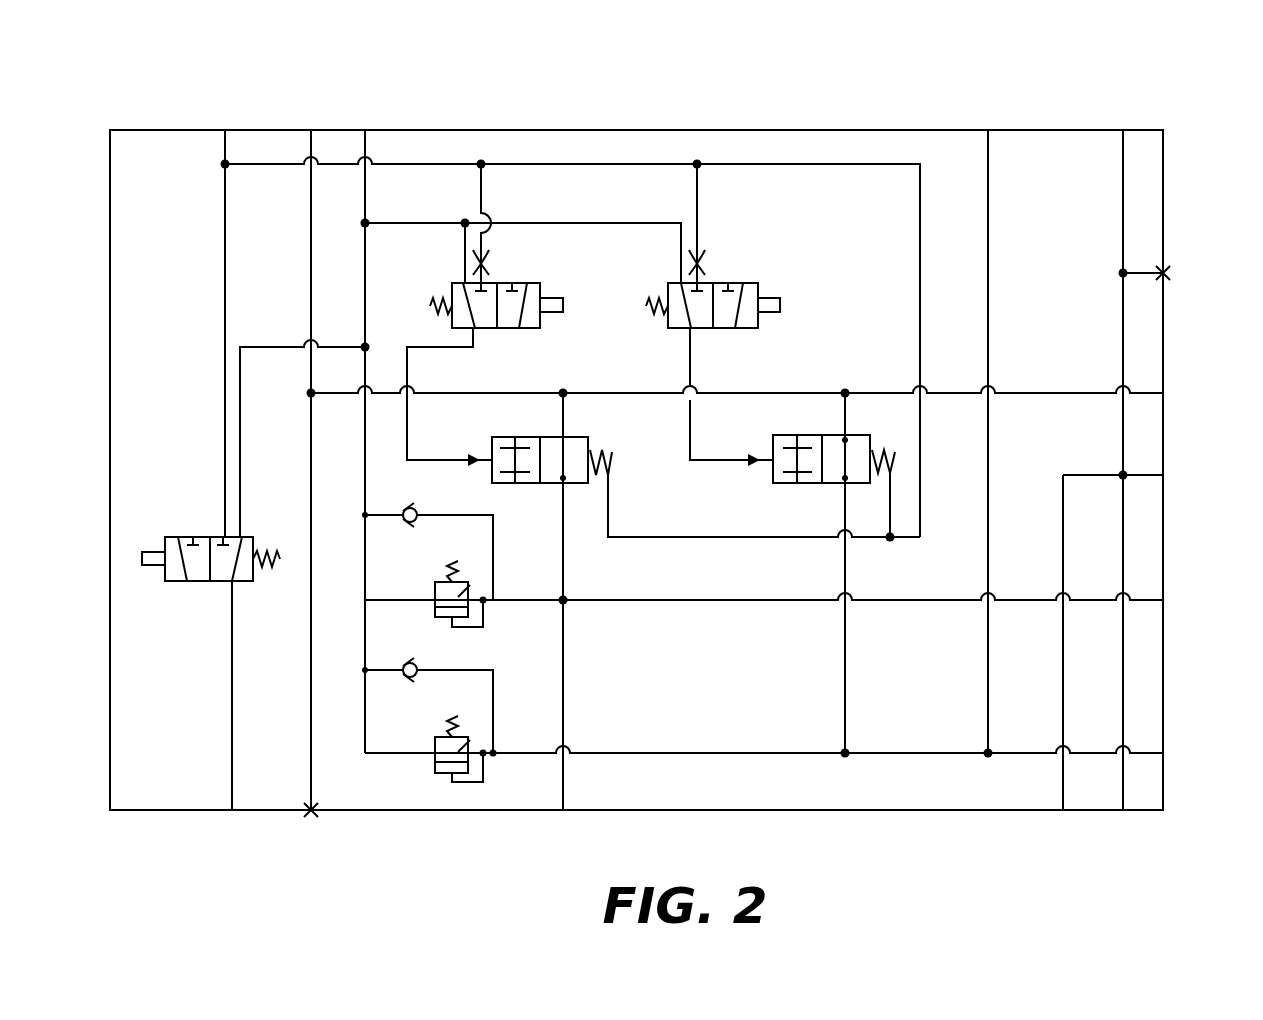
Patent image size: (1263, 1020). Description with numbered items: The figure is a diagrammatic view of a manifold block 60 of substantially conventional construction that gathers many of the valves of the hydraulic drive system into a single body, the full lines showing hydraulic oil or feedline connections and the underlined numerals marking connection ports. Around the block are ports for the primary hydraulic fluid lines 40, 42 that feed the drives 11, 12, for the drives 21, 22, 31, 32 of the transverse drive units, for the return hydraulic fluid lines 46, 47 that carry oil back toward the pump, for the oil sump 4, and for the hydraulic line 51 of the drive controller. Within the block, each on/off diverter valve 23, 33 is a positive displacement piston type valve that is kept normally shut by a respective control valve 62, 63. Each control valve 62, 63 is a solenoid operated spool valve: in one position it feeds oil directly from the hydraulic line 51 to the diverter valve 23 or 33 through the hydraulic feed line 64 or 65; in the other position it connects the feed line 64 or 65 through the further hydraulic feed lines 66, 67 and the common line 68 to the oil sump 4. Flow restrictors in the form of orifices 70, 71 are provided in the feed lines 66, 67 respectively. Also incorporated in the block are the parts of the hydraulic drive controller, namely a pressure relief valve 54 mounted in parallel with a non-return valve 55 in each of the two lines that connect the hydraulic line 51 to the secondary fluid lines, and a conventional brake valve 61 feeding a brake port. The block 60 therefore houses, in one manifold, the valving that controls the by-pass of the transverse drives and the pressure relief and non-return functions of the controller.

The manifold block 60 is at (1177, 120).
The oil sump 4 is at (240, 117).
The return hydraulic fluid line 46 is at (208, 849).
The return hydraulic fluid line 47 is at (289, 117).
The hydraulic line 51 is at (343, 117).
The drive 32 is at (961, 117).
The drive 31 is at (1091, 117).
The primary hydraulic fluid line 42 is at (1103, 851).
The drive 21 is at (1038, 851).
The drive 22 is at (536, 849).
The primary hydraulic fluid line 40 is at (1172, 495).
The drive 11 is at (1172, 610).
The drive 12 is at (1172, 770).
The hydraulic feed line 68 is at (593, 164).
The hydraulic feed line 66 is at (493, 213).
The hydraulic feed line 67 is at (697, 212).
The orifice 70 is at (487, 262).
The orifice 71 is at (703, 262).
The control valve 62 is at (542, 296).
The control valve 63 is at (760, 296).
The hydraulic feed line 64 is at (408, 360).
The hydraulic feed line 65 is at (690, 358).
The diverter valve 23 is at (573, 450).
The diverter valve 33 is at (860, 452).
The brake valve 61 is at (202, 572).
The non-return valve 55 is at (408, 507).
The pressure relief valve 54 is at (460, 593).